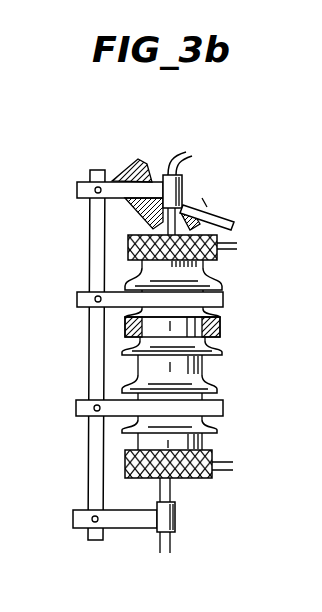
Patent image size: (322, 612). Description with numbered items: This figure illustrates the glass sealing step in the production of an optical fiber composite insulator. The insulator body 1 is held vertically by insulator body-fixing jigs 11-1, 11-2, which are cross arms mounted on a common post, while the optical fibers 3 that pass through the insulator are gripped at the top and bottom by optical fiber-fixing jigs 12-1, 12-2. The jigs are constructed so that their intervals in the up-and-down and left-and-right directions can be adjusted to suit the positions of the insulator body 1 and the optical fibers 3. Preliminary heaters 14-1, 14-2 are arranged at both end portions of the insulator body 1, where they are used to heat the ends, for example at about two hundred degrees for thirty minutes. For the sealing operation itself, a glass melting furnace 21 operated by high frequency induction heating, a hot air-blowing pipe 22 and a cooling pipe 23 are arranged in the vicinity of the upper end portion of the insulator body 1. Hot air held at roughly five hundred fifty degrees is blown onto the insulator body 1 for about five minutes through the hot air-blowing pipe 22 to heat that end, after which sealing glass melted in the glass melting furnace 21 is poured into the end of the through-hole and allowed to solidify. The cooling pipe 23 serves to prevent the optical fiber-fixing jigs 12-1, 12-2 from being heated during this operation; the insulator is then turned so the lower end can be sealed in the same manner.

The insulator body 1 is at (202, 361).
The optical fibers 3 is at (189, 160).
The insulator body-fixing jig 11-1 is at (223, 300).
The insulator body-fixing jig 11-2 is at (223, 408).
The optical fiber-fixing jig 12-1 is at (183, 186).
The optical fiber-fixing jig 12-2 is at (176, 518).
The preliminary heater 14-1 is at (217, 258).
The preliminary heater 14-2 is at (212, 453).
The glass melting furnace 21 is at (136, 168).
The hot air-blowing pipe 22 is at (220, 212).
The cooling pipe 23 is at (236, 228).